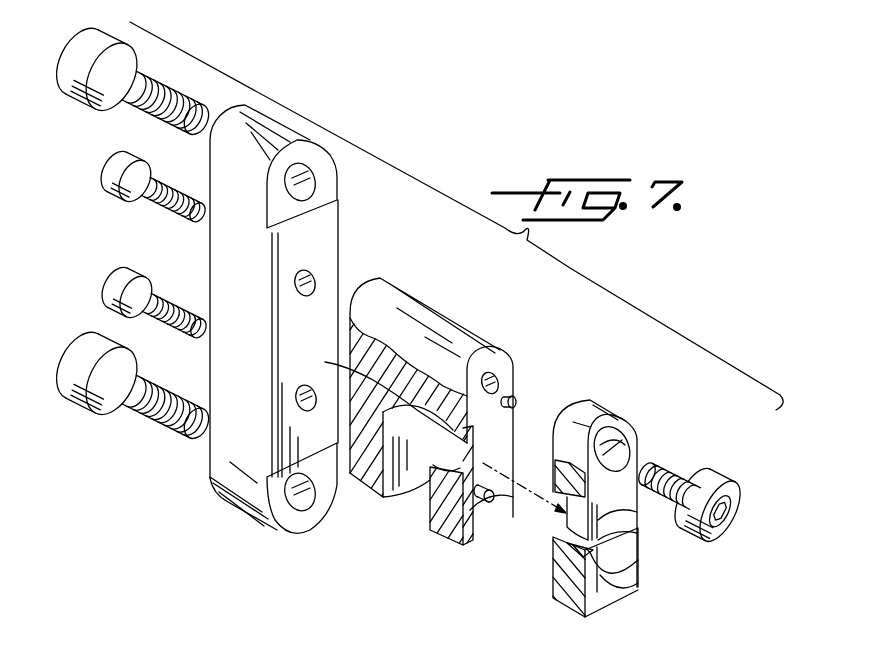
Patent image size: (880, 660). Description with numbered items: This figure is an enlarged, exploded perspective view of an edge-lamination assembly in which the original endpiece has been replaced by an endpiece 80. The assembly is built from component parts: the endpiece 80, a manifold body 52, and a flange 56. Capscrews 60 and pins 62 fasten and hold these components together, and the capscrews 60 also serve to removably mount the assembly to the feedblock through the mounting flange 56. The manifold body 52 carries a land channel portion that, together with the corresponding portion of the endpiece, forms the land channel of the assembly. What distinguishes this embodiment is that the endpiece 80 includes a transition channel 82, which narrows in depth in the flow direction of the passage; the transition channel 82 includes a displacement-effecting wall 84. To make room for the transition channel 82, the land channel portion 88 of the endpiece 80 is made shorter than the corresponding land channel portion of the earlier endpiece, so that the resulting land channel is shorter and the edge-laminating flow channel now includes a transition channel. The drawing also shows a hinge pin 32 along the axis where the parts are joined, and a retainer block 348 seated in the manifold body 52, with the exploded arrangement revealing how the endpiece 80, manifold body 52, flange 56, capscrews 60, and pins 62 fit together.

The capscrews 60 is at (107, 170).
The flange 56 is at (210, 479).
The manifold body 52 is at (423, 303).
The hinge pin 32 is at (382, 396).
The retainer block 348 is at (430, 500).
The pins 62 is at (487, 478).
The endpiece 80 is at (607, 413).
The transition channel 82 is at (630, 530).
The displacement-effecting wall 84 is at (615, 518).
The land channel portion 88 is at (483, 527).